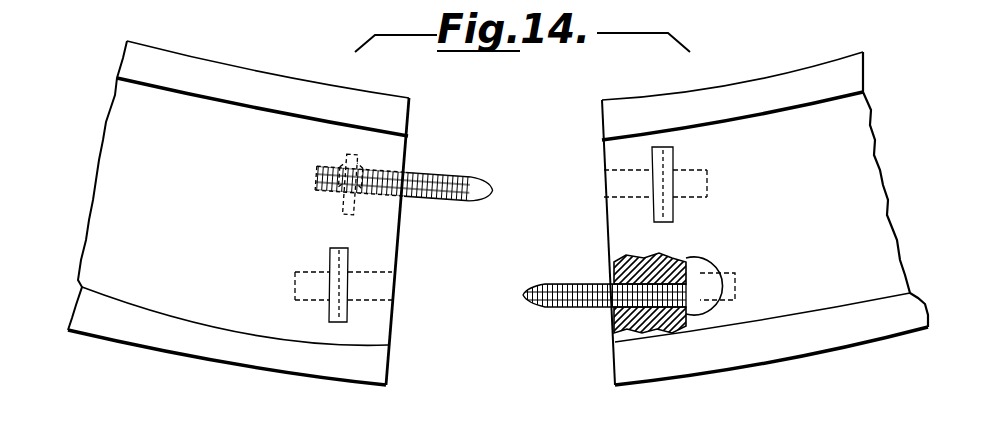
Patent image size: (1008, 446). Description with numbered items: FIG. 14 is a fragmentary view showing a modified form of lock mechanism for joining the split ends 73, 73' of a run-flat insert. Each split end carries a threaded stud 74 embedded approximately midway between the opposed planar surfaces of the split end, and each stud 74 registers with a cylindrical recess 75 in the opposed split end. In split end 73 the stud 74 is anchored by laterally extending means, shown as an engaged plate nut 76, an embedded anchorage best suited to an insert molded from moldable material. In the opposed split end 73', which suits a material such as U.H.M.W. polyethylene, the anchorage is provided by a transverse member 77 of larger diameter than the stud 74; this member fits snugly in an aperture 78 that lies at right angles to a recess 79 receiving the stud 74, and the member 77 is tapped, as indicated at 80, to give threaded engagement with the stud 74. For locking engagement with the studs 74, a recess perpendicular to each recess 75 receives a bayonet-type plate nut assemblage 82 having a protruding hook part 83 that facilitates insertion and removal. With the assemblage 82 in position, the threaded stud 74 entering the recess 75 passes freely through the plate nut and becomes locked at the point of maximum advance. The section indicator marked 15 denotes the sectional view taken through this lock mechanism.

The split end 73 is at (238, 213).
The split end 73' is at (765, 218).
The threaded stud 74 is at (463, 178).
The cylindrical recess 75 is at (372, 274).
The plate nut 76 is at (350, 164).
The transverse member 77 is at (697, 308).
The aperture 78 is at (712, 307).
The recess 79 is at (637, 330).
The tapped portion 80 is at (682, 262).
The bayonet-type plate nut assemblage 82 is at (350, 315).
The hook part 83 is at (326, 298).
The section line indicator 15 is at (272, 276).